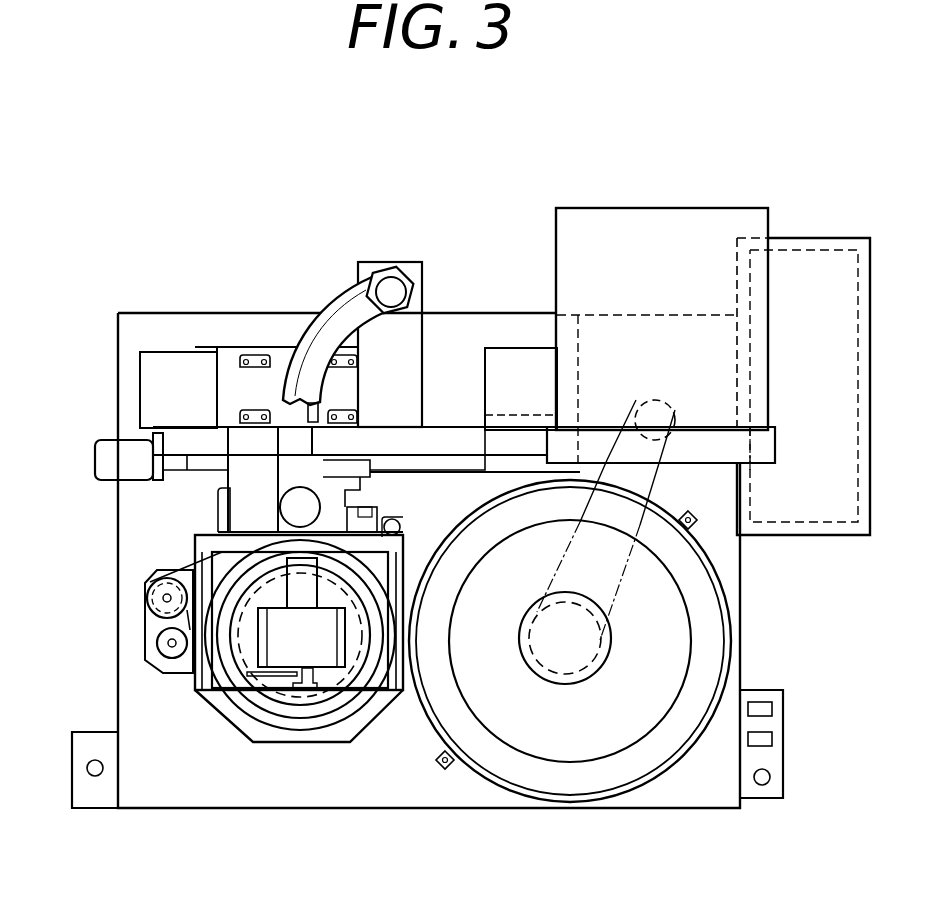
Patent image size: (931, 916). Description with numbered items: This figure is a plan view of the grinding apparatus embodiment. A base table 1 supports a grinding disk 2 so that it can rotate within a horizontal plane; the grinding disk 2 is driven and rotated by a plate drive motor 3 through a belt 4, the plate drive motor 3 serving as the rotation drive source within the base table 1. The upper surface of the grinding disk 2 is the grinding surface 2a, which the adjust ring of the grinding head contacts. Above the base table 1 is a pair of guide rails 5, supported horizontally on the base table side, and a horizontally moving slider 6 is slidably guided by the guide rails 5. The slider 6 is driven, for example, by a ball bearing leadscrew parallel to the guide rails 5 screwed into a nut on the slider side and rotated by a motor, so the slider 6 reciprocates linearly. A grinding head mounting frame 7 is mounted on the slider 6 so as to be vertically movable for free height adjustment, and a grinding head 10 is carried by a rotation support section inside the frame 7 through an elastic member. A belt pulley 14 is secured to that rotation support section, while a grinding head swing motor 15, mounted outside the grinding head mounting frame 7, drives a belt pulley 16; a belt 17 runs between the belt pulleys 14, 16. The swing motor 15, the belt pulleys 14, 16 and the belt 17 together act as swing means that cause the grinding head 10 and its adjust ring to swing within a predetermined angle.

The base table 1 is at (667, 793).
The grinding disk 2 is at (532, 773).
The grinding surface 2a is at (683, 637).
The plate drive motor 3 is at (657, 398).
The belt 4 is at (618, 588).
The guide rails 5 is at (452, 462).
The horizontally moving slider 6 is at (372, 463).
The grinding head mounting frame 7 is at (202, 545).
The grinding head 10 is at (335, 727).
The belt pulley 14 is at (265, 727).
The grinding head swing motor 15 is at (153, 575).
The belt pulley 16 is at (145, 607).
The belt 17 is at (207, 557).